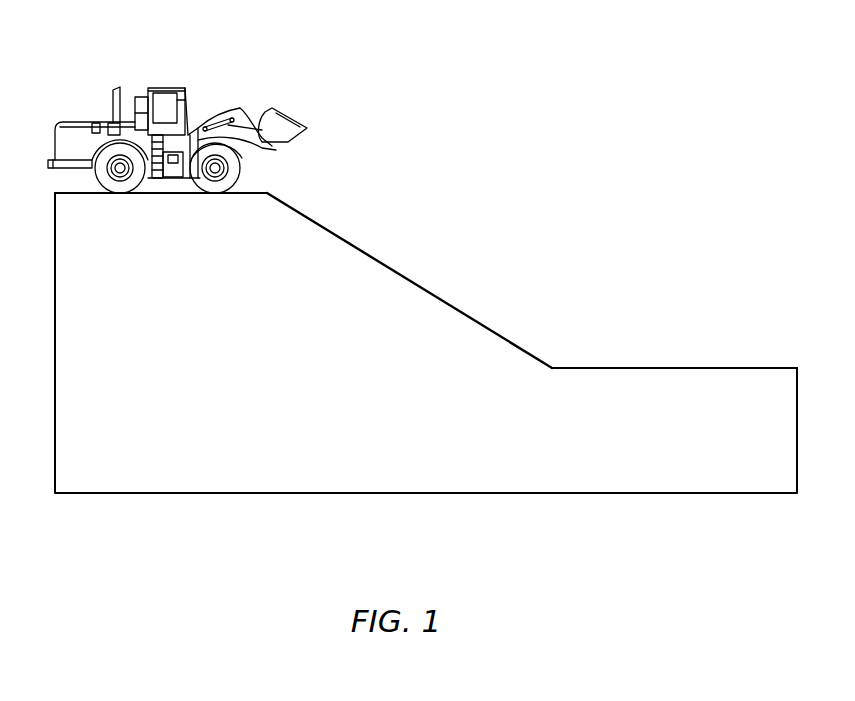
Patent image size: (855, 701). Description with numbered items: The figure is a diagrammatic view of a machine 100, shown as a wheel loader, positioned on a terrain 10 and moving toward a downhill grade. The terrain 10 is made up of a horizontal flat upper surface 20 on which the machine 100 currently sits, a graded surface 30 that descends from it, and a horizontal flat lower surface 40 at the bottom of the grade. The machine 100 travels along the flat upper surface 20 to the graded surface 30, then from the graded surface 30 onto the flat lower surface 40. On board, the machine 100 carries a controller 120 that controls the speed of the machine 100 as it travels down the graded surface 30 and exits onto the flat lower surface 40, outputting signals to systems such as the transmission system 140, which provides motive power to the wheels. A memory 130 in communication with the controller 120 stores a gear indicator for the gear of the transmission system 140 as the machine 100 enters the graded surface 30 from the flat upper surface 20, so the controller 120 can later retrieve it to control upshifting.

The terrain 10 is at (408, 308).
The flat upper surface 20 is at (58, 192).
The graded surface 30 is at (407, 275).
The flat lower surface 40 is at (727, 365).
The machine 100 is at (170, 105).
The controller 120 is at (107, 117).
The memory 130 is at (88, 121).
The transmission system 140 is at (182, 110).